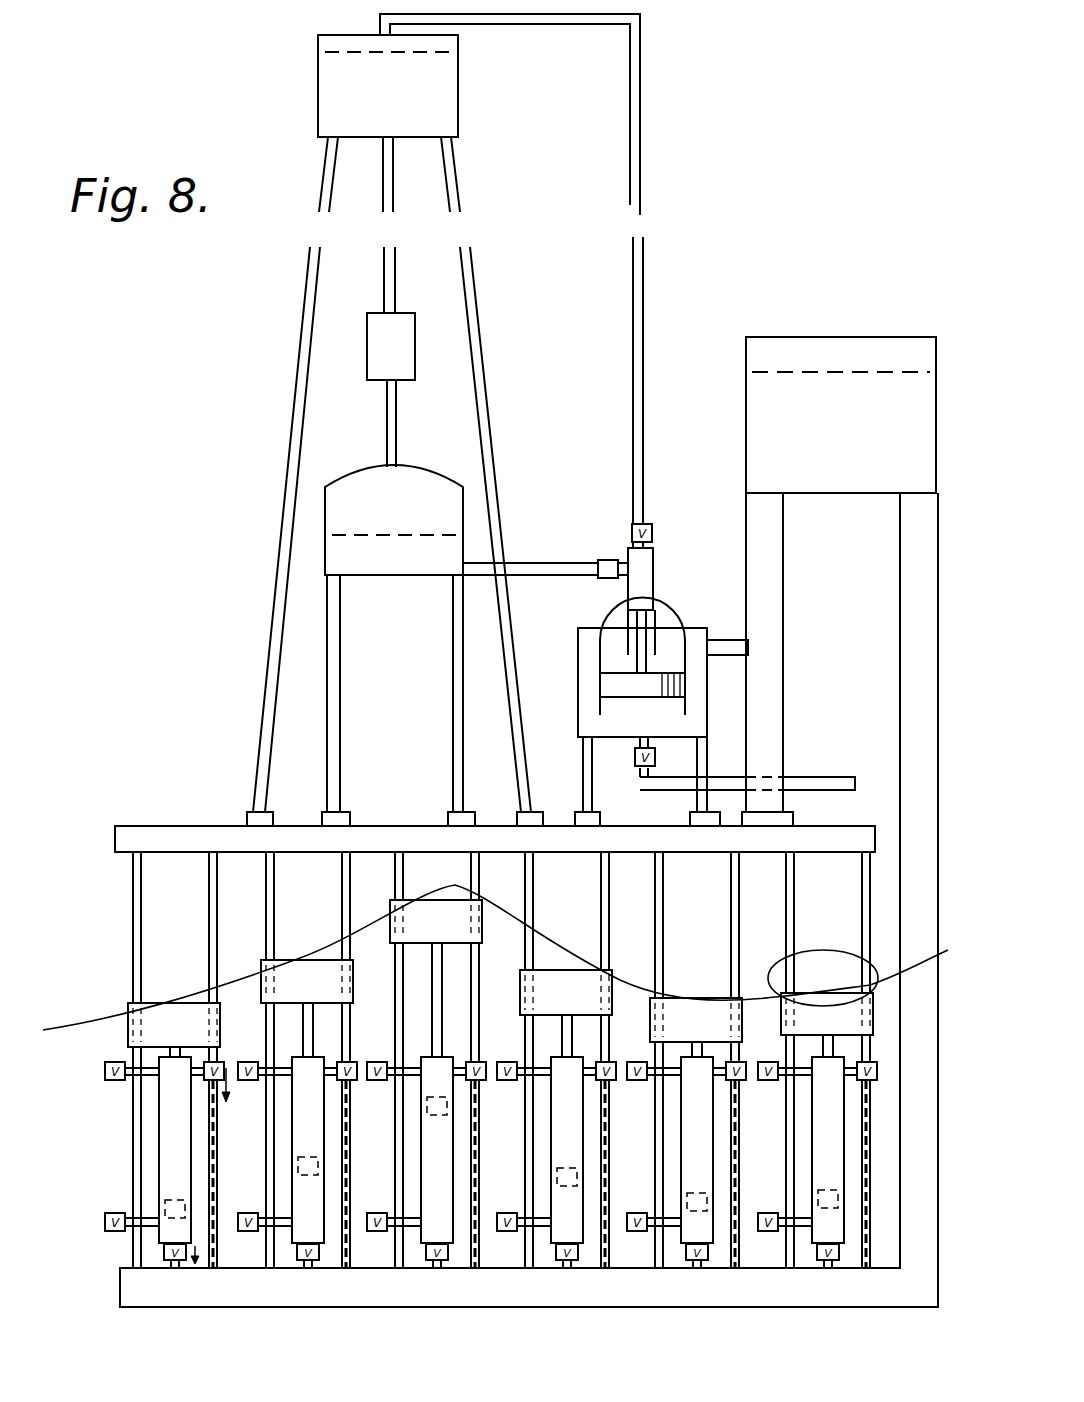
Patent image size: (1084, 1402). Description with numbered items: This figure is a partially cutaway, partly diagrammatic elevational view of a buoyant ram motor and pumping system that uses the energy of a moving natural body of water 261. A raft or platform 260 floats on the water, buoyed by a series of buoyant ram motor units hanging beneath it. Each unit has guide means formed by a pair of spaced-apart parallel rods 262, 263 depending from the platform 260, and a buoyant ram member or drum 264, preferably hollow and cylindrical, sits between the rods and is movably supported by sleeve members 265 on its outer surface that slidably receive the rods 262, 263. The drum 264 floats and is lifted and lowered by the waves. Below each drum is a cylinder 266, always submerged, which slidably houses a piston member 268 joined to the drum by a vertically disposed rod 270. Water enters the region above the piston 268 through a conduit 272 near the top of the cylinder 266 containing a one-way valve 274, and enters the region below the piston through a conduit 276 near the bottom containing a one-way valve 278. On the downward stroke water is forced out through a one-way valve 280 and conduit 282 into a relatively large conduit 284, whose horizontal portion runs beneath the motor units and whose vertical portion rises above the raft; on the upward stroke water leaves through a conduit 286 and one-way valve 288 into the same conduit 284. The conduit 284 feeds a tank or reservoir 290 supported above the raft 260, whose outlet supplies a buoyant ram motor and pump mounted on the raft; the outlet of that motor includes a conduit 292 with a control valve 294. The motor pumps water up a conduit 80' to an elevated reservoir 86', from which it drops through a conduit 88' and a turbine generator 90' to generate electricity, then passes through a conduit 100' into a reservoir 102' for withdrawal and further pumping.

The reservoir 86' is at (349, 123).
The conduit 80' is at (511, 269).
The conduit 88' is at (365, 259).
The turbine generator 90' is at (370, 346).
The conduit 100' is at (430, 423).
The reservoir 102' is at (470, 629).
The control valve 294 is at (635, 757).
The conduit 292 is at (804, 777).
The tank or reservoir 290 is at (858, 338).
The conduit 284 is at (900, 676).
The conduit 282 is at (162, 1288).
The raft or platform 260 is at (128, 830).
The guide rod 262 is at (130, 882).
The guide rod 263 is at (208, 920).
The buoyant ram member or drum 264 is at (318, 956).
The body of water 261 is at (92, 1017).
The sleeve member 265 is at (126, 1016).
The rod 270 is at (432, 980).
The cylinder 266 is at (160, 1136).
The piston member 268 is at (160, 1207).
The conduit 272 is at (130, 1074).
The one-way valve 274 is at (100, 1072).
The one-way valve 288 is at (206, 1072).
The conduit 286 is at (202, 1080).
The one-way valve 278 is at (150, 1220).
The conduit 276 is at (158, 1246).
The one-way valve 280 is at (174, 1264).